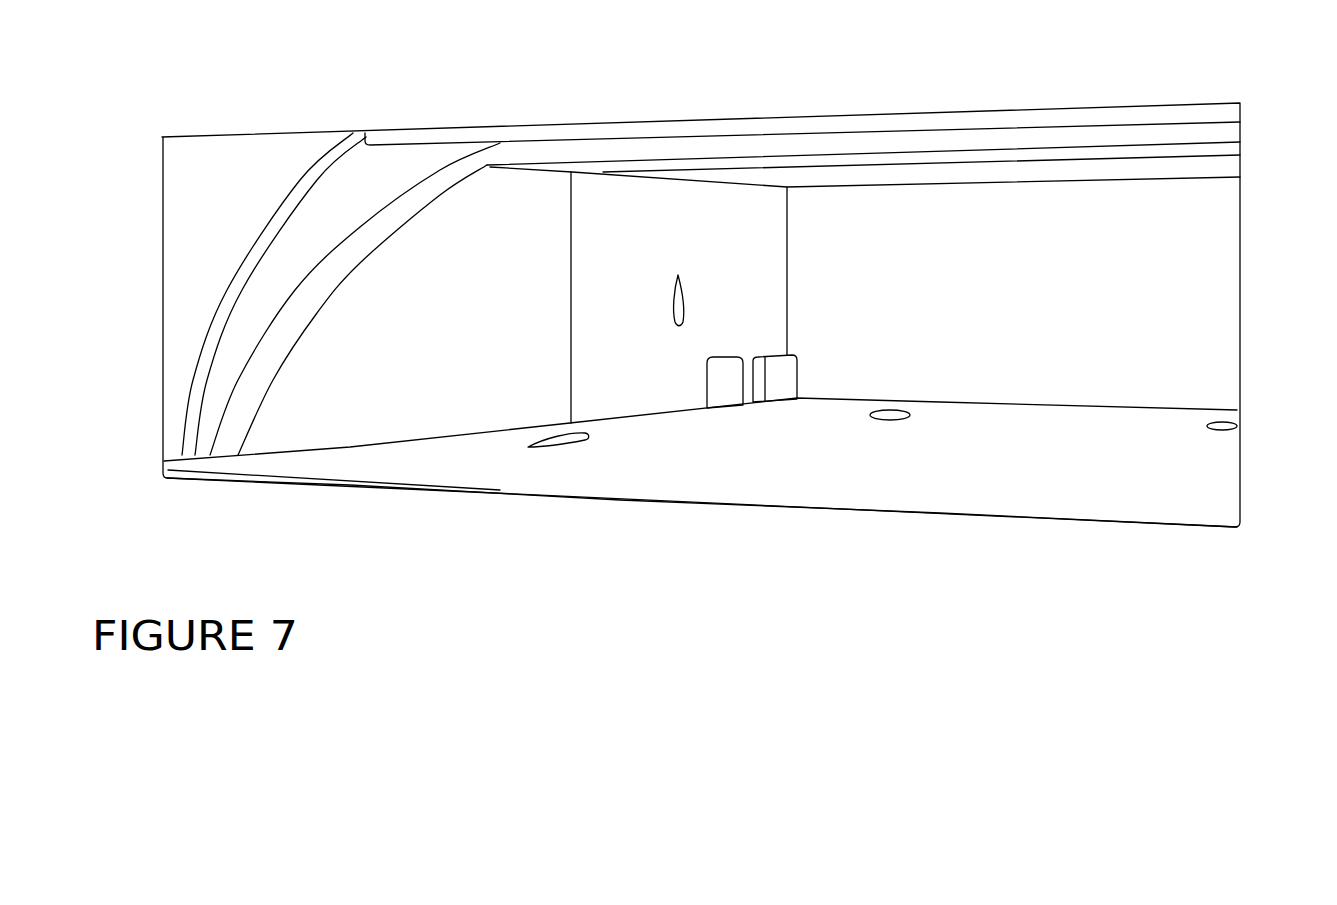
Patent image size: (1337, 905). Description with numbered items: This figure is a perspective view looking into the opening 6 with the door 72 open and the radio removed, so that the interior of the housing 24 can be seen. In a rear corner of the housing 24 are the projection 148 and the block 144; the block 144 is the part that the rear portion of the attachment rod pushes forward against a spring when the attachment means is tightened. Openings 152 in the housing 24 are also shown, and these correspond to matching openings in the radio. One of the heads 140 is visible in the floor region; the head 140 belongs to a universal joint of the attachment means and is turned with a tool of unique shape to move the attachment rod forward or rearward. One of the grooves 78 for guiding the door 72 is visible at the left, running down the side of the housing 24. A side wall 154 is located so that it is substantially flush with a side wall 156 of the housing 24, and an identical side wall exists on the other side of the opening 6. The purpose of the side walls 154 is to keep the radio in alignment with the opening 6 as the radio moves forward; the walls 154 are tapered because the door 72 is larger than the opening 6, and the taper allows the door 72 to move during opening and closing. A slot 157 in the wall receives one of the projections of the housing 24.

The opening 6 is at (1050, 518).
The housing 24 is at (1205, 265).
The door 72 is at (412, 138).
The groove 78 is at (217, 316).
The head 140 is at (565, 438).
The block 144 is at (780, 377).
The projection 148 is at (727, 368).
The openings 152 is at (892, 413).
The side wall 154 is at (315, 420).
The side wall of the housing 156 is at (600, 225).
The slot 157 is at (673, 295).